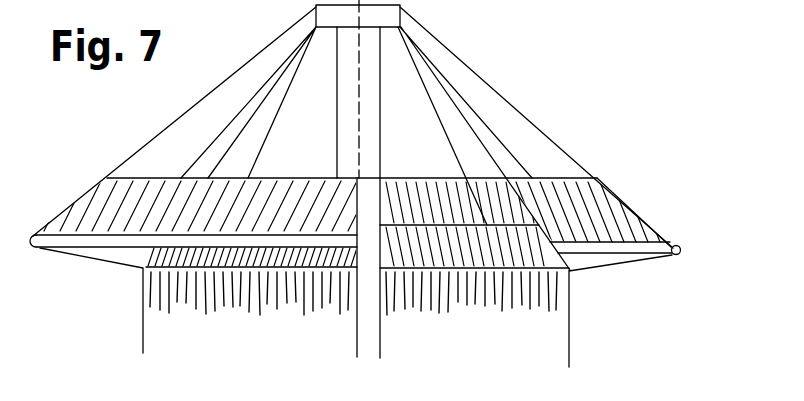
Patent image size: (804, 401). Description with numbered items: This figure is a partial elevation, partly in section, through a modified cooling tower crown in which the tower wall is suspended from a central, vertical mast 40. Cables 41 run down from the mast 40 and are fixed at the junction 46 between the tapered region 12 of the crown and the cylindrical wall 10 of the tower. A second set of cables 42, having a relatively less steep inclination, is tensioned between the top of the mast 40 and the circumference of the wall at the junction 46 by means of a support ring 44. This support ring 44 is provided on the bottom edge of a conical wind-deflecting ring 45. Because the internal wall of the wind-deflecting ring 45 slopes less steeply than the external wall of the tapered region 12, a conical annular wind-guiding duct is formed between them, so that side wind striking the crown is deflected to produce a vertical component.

The cylindrical wall 10 is at (569, 355).
The tapered region 12 is at (485, 250).
The central vertical mast 40 is at (374, 128).
The cables 41 is at (441, 82).
The cables 42 is at (530, 120).
The support ring 44 is at (676, 256).
The conical wind-deflecting ring 45 is at (592, 213).
The junction 46 is at (143, 268).